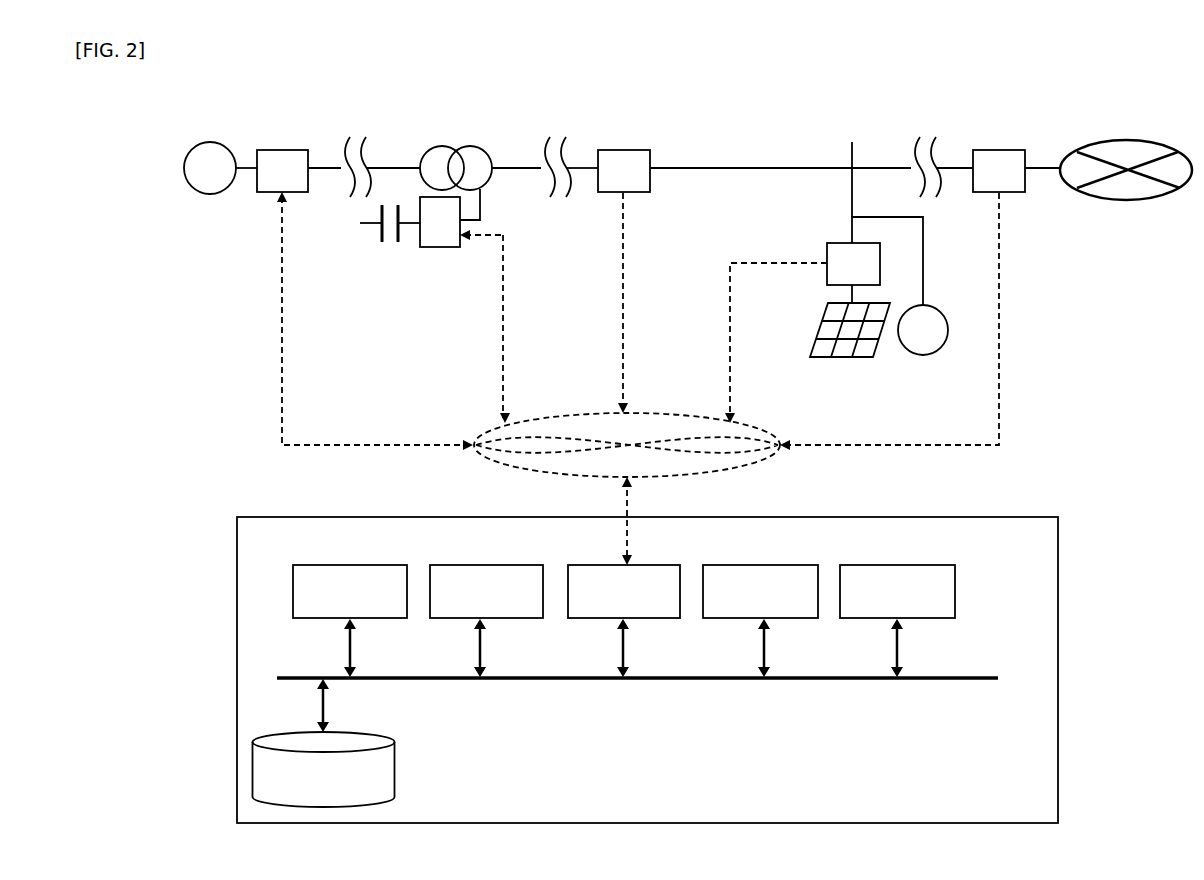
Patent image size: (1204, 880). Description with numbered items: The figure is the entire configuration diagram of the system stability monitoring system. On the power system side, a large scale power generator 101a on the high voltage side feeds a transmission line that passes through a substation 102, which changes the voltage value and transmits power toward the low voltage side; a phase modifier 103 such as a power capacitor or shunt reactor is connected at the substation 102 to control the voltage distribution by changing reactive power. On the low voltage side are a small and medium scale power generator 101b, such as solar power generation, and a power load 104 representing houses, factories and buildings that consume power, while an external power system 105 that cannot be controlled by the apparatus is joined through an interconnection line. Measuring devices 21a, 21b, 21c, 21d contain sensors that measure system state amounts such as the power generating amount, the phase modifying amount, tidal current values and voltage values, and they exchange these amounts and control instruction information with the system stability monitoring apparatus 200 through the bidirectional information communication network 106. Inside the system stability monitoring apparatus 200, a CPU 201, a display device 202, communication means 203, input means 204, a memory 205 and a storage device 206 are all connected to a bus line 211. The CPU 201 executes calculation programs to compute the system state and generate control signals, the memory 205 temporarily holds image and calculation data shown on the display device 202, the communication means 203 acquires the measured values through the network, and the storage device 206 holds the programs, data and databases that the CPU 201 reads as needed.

The power generator 101a is at (213, 197).
The power generator 101b is at (858, 358).
The substation 102 is at (478, 136).
The phase modifier 103 is at (380, 243).
The power load 104 is at (927, 358).
The external power system 105 is at (1067, 193).
The information communication network 106 is at (513, 462).
The measuring device 21a is at (283, 152).
The measuring device 21b is at (827, 243).
The measuring device 21c is at (433, 247).
The measuring device 21d is at (647, 193).
The system stability monitoring apparatus 200 is at (235, 531).
The central processing unit (CPU) 201 is at (328, 622).
The display device 202 is at (458, 622).
The communication means 203 is at (592, 622).
The input means 204 is at (743, 622).
The memory 205 is at (877, 622).
The storage device 206 is at (297, 730).
The bus line 211 is at (990, 672).